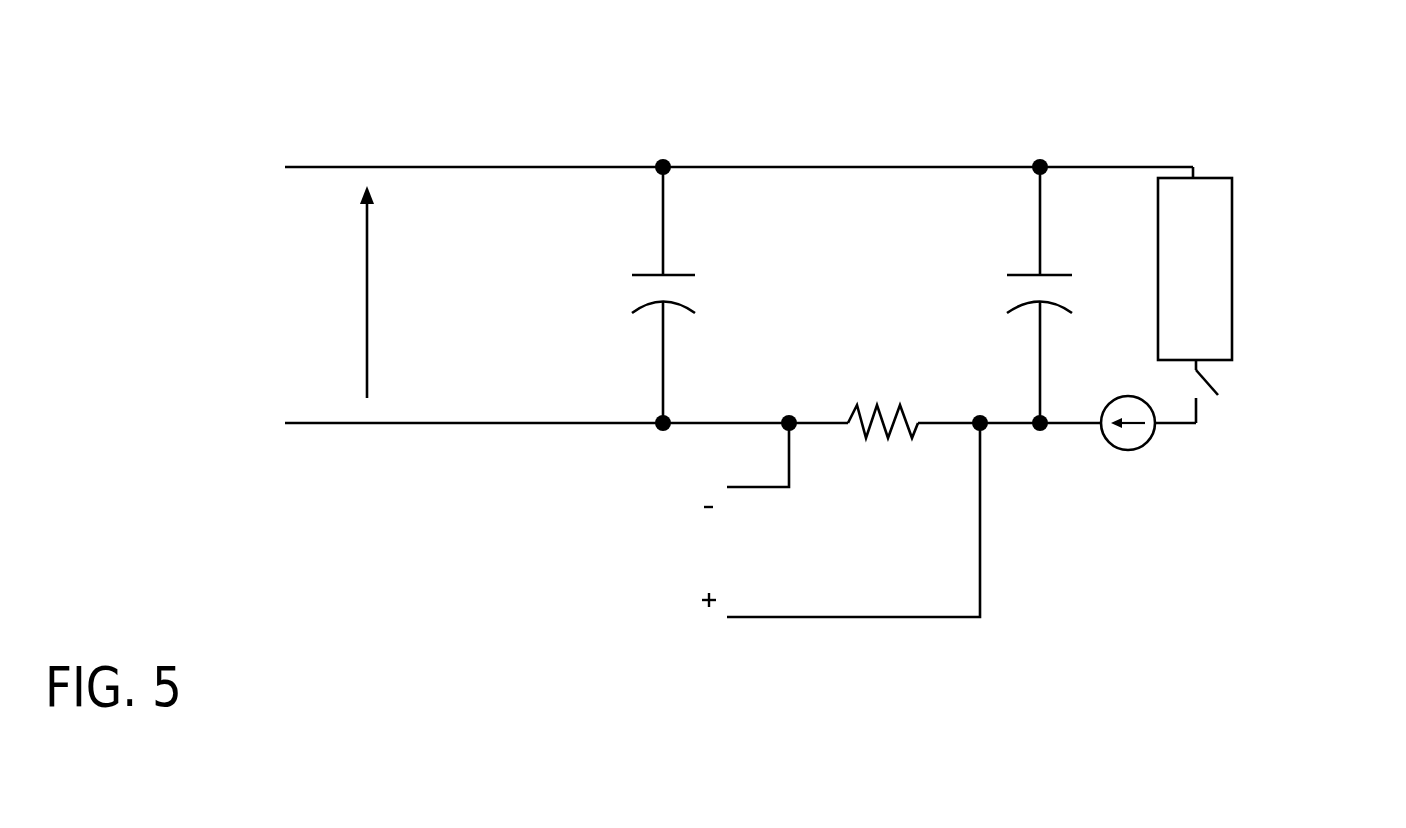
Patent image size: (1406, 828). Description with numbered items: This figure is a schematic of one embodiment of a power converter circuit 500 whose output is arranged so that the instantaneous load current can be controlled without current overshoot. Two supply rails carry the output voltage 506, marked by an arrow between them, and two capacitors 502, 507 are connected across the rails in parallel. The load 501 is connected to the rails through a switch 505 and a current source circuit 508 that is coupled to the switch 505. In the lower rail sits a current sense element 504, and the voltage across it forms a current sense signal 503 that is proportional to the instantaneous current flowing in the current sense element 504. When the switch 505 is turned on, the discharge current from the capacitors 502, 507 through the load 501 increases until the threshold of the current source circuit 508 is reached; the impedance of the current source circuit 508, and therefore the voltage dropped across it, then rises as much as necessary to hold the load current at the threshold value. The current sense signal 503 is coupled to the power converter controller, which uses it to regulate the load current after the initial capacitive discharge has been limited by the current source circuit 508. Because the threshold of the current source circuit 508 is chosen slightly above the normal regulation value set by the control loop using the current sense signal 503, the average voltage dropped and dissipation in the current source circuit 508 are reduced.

The power converter circuit 500 is at (160, 78).
The load 501 is at (1243, 278).
The capacitor 502 is at (647, 265).
The current sense signal 503 is at (555, 512).
The current sense element 504 is at (882, 463).
The switch 505 is at (1232, 402).
The output voltage Vout 506 is at (250, 285).
The capacitor 507 is at (1023, 263).
The current source circuit 508 is at (1138, 448).